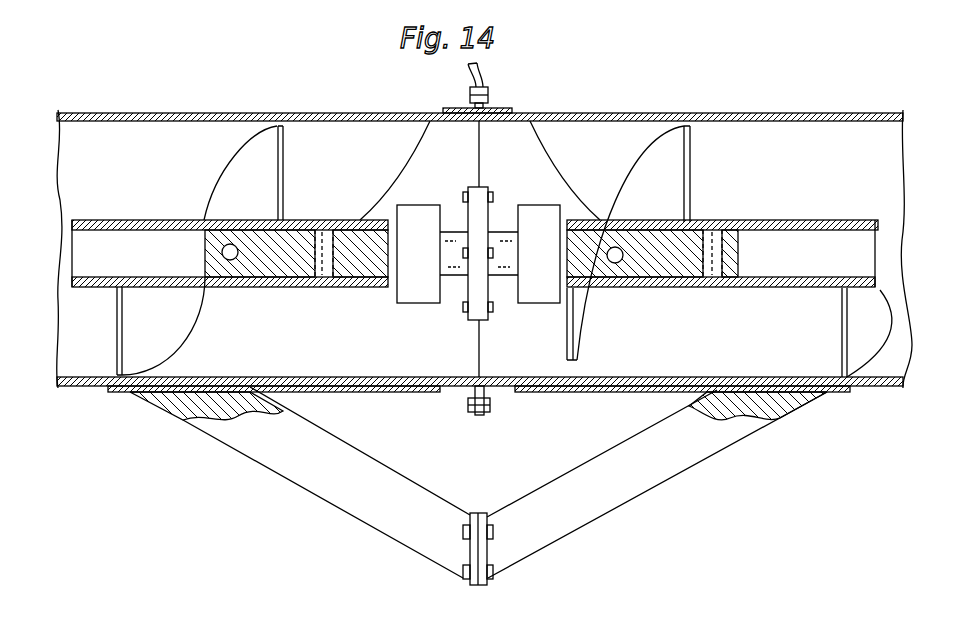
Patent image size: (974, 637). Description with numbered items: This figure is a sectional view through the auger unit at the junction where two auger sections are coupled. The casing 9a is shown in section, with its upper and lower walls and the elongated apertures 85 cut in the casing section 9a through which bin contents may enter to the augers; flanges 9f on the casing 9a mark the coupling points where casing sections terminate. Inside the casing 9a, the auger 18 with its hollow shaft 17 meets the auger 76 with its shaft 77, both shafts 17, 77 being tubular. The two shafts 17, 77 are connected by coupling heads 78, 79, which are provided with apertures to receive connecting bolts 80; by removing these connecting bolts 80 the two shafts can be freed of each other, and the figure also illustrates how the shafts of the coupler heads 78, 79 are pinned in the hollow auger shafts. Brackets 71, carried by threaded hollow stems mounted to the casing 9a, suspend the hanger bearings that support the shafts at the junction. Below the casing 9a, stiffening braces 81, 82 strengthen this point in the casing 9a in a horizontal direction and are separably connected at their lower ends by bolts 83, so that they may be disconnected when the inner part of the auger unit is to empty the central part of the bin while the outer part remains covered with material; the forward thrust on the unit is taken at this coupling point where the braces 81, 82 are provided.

The casing 9a is at (560, 114).
The flange 9f is at (473, 67).
The hollow shaft 17 is at (772, 288).
The auger 18 is at (592, 330).
The bracket 71 is at (413, 304).
The auger 76 is at (176, 336).
The shaft 77 is at (252, 288).
The coupling head 78 is at (487, 319).
The coupling head 79 is at (467, 312).
The connecting bolt 80 is at (466, 194).
The stiffening brace 81 is at (575, 531).
The stiffening brace 82 is at (327, 498).
The bolt 83 is at (503, 538).
The elongated aperture 85 is at (59, 181).